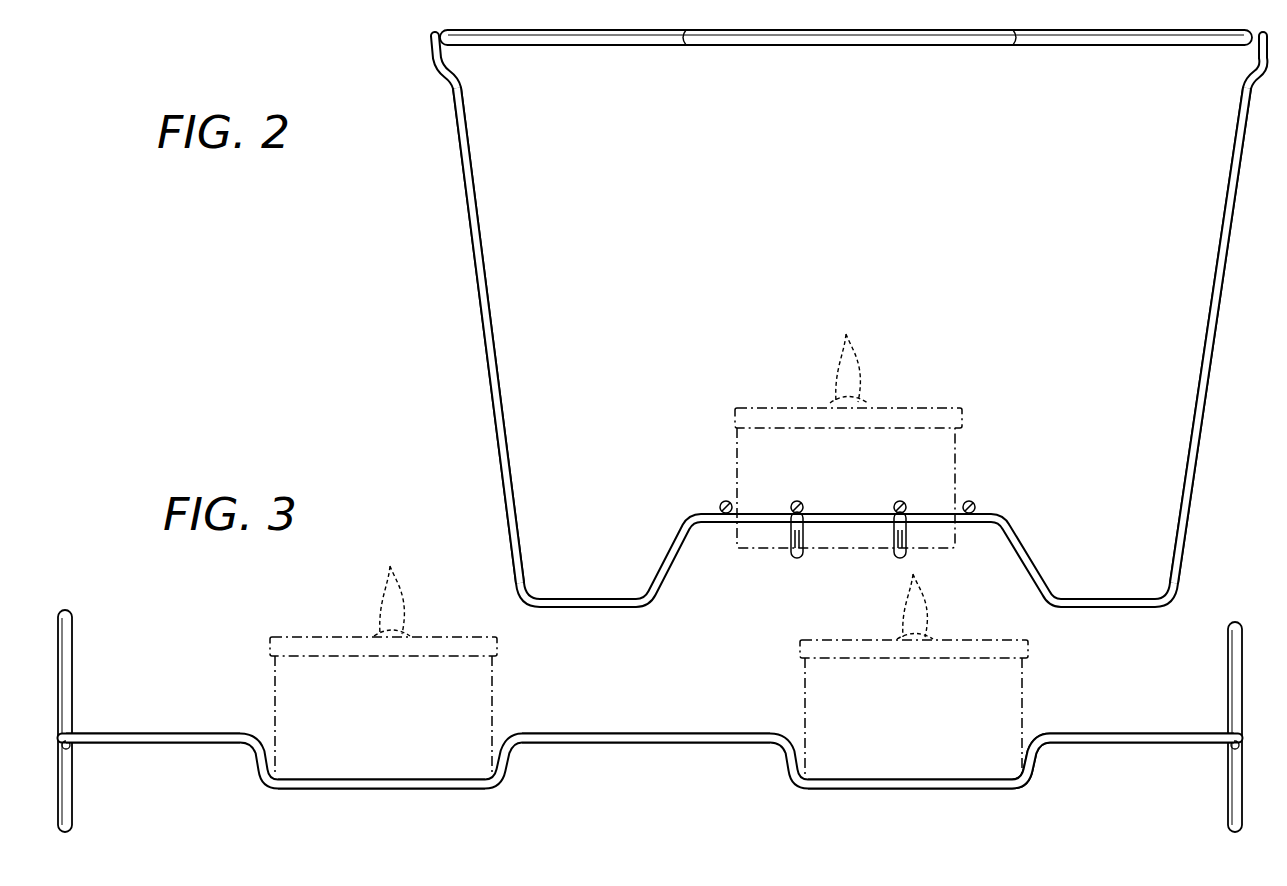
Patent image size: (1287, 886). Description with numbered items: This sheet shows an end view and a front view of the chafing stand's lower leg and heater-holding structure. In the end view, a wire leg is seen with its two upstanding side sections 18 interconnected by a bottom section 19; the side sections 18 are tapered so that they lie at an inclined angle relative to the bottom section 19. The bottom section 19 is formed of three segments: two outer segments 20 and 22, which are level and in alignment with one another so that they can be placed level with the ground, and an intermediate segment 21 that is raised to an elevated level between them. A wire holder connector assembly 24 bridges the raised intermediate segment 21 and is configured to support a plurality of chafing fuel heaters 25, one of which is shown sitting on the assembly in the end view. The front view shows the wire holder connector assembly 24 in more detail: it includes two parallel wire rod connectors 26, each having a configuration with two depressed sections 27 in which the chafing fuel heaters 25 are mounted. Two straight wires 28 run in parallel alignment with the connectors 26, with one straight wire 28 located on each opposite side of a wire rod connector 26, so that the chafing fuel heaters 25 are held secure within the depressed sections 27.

In FIG. 2, the upstanding side section 18 is at (483, 218).
In FIG. 2, the bottom section 19 is at (484, 341).
In FIG. 2, the outer segment 20 is at (607, 600).
In FIG. 2, the intermediate segment 21 is at (990, 513).
In FIG. 2, the outer segment 22 is at (1110, 600).
In FIG. 3, the wire holder connector assembly 24 is at (383, 811).
In FIG. 2, the chafing fuel heater 25 is at (750, 438).
In FIG. 3, the chafing fuel heater 25 is at (474, 696).
In FIG. 3, the wire rod connector 26 is at (192, 732).
In FIG. 3, the depressed section 27 is at (332, 789).
In FIG. 3, the straight wire 28 is at (1040, 733).